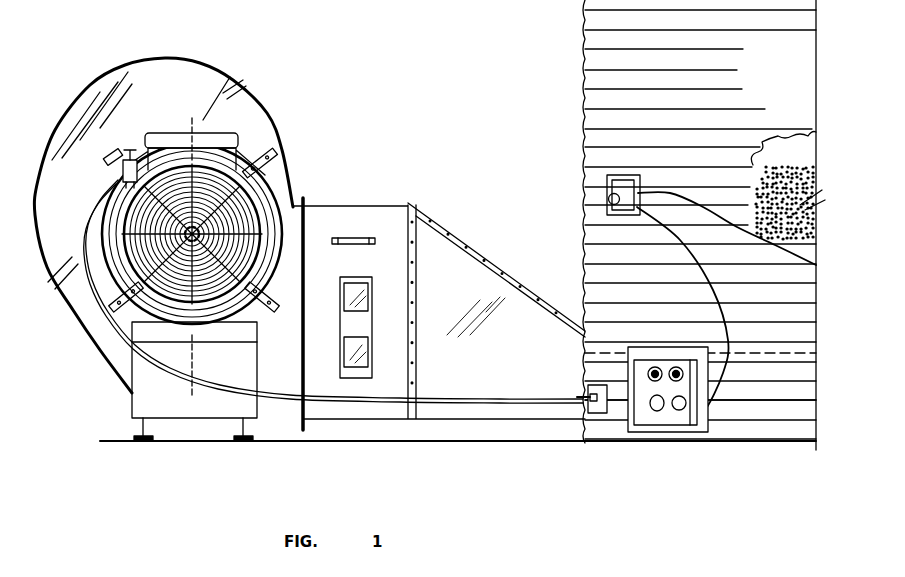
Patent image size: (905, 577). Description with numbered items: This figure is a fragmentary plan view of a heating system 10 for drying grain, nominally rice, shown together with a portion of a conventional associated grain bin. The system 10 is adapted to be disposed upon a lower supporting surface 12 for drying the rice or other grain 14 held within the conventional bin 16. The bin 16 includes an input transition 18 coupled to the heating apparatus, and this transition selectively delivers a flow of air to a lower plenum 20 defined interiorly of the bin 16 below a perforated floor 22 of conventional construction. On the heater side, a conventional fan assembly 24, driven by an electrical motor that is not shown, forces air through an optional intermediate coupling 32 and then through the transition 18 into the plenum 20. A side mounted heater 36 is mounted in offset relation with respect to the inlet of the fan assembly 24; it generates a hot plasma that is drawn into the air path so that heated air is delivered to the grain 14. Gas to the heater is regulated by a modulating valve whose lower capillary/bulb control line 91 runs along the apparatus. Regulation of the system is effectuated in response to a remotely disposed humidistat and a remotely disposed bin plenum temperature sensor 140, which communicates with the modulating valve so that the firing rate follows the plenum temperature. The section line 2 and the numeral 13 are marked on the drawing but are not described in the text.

The heating system 10 is at (341, 126).
The section line 2- 2 is at (195, 126).
The lower supporting surface 12 is at (285, 436).
The support feet 13 is at (153, 436).
The rice 14 is at (762, 154).
The bin 16 is at (597, 96).
The input transition 18 is at (486, 258).
The lower plenum 20 is at (785, 393).
The perforated floor 22 is at (786, 353).
The fan assembly 24 is at (232, 73).
The intermediate coupling 32 is at (358, 207).
The side mounted heater 36 is at (120, 212).
The capillary/bulb control line 91 is at (462, 397).
The bin plenum temperature sensor 140 is at (588, 399).